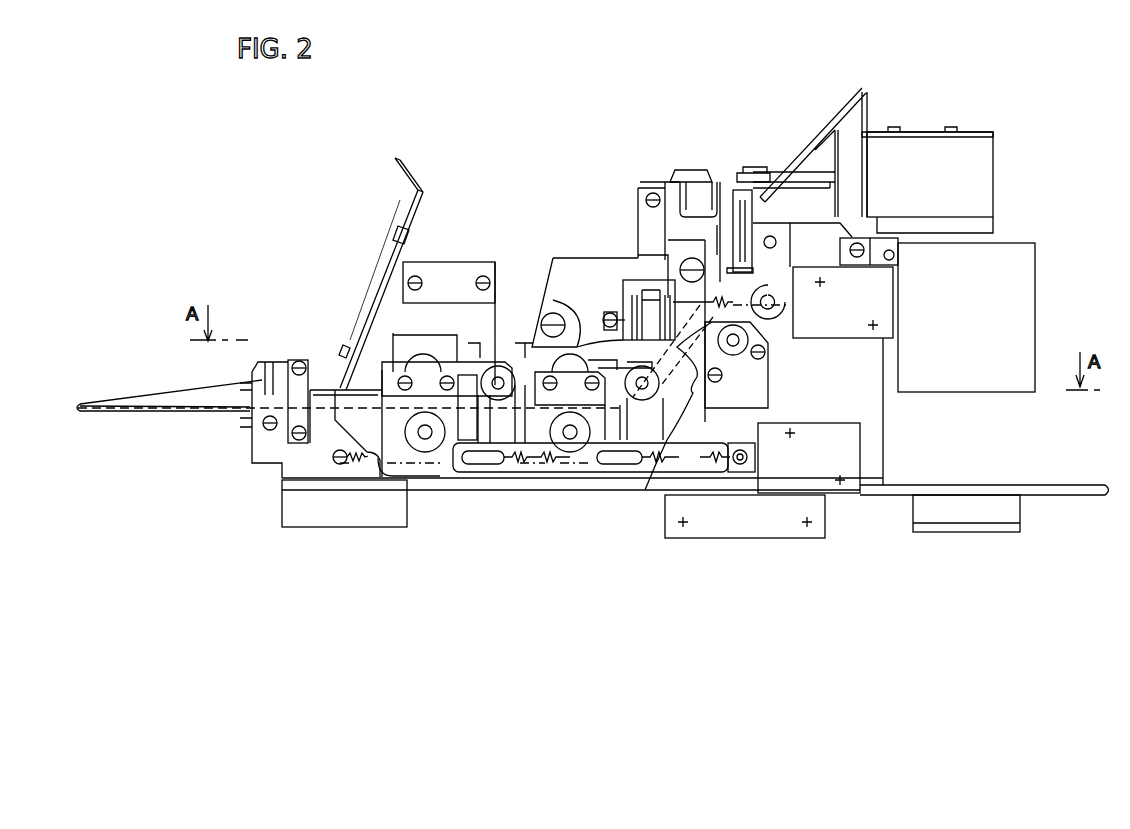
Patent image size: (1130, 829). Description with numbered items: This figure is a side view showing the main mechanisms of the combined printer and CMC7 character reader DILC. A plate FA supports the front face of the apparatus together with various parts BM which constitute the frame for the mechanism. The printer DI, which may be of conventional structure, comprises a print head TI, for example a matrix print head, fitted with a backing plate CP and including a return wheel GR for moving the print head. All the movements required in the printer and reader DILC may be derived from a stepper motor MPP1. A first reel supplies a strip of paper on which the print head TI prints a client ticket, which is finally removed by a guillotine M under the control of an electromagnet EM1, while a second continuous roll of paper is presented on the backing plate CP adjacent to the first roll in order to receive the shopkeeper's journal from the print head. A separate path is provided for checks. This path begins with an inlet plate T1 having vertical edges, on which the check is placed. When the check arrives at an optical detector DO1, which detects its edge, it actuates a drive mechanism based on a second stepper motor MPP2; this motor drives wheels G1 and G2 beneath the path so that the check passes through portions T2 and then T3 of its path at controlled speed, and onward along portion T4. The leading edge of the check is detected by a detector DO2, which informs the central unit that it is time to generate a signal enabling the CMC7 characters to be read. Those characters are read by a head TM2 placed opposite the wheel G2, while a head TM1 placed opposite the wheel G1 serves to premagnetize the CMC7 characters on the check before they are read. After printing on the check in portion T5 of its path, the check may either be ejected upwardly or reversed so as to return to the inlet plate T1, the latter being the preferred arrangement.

The inlet plate T1 is at (154, 393).
The optical detector DO1 is at (295, 418).
The path portion T2 is at (325, 395).
The plate FA is at (380, 290).
The frame parts BM is at (458, 276).
The printer and CMC7 character reader DILC is at (277, 211).
The premagnetizing head TM1 is at (425, 368).
The wheel G1 is at (414, 446).
The detector DO2 is at (462, 418).
The path portion T3 is at (542, 416).
The wheel G2 is at (589, 446).
The path portion T4 is at (660, 447).
The reading head TM2 is at (570, 362).
The printer DI is at (585, 115).
The print head TI is at (690, 178).
The backing plate CP is at (694, 215).
The return wheel GR is at (650, 300).
The path portion T5 is at (721, 222).
The guillotine M is at (735, 178).
The electromagnet EM1 is at (935, 145).
The stepper motor MPP1 is at (1020, 272).
The second stepper motor MPP2 is at (812, 515).